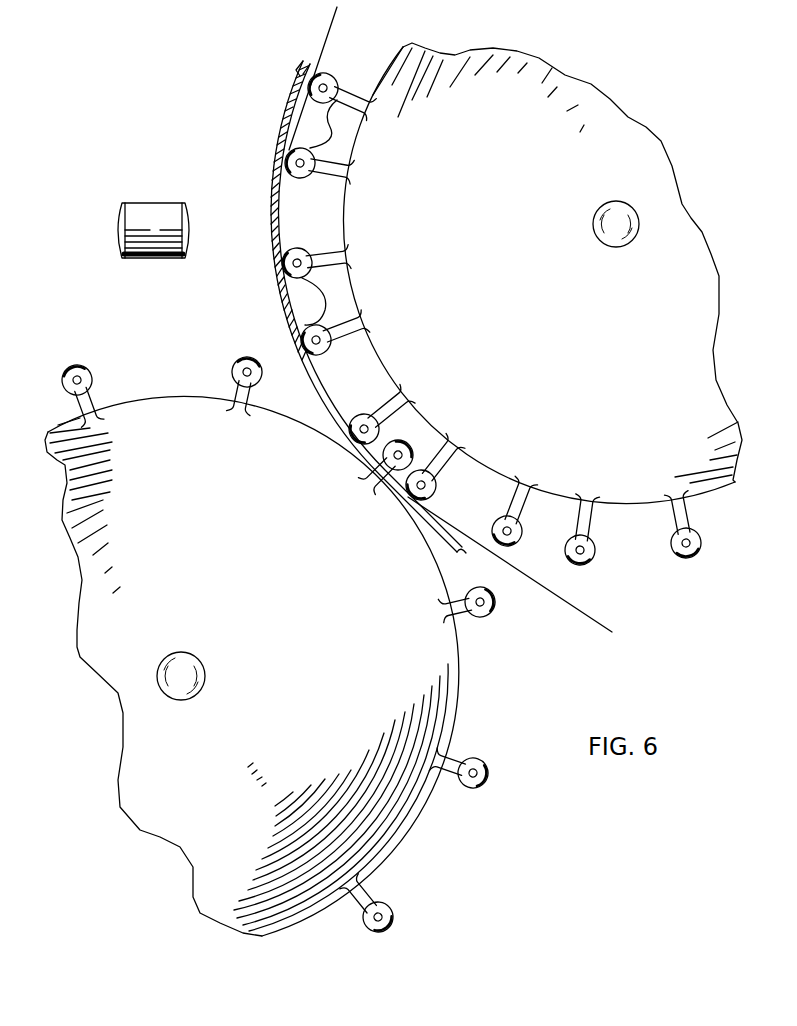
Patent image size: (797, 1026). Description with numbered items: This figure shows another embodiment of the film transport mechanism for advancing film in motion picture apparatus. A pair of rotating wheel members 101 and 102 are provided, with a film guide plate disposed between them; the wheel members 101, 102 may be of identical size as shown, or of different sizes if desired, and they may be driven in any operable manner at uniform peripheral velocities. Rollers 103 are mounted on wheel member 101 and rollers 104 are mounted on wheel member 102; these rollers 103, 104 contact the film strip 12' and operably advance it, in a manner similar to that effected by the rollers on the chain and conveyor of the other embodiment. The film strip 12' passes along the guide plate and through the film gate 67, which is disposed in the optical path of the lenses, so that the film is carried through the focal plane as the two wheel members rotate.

The rotating wheel member 101 is at (456, 700).
The rotating wheel member 102 is at (630, 503).
The rollers 103 is at (488, 766).
The rollers 104 is at (684, 559).
The film gate 67 is at (273, 222).
The film strip 12' is at (450, 332).